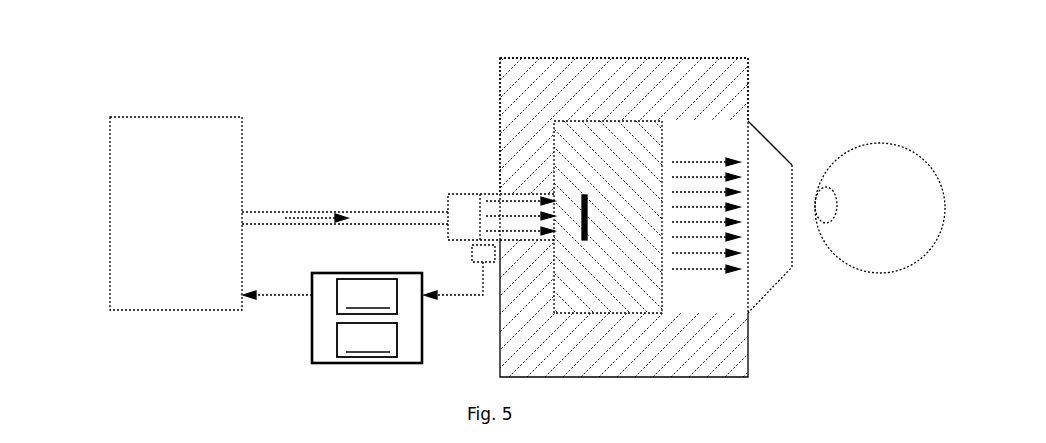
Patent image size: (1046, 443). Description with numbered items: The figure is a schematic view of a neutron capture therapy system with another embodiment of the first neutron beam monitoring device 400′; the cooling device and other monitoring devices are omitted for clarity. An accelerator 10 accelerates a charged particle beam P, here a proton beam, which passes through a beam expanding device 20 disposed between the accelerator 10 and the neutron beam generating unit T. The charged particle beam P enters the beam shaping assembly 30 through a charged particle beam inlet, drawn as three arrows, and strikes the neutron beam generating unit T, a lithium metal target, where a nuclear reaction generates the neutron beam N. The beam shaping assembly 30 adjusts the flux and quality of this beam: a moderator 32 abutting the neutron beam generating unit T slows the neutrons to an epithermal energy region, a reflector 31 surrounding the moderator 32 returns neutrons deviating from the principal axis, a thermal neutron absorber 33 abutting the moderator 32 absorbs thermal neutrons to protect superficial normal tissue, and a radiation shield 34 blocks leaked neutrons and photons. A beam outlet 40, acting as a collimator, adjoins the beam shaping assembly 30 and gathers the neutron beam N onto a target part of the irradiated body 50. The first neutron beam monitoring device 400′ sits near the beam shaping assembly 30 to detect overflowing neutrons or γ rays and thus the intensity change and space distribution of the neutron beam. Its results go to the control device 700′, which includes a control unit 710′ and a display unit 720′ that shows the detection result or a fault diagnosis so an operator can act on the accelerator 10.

The accelerator 10 is at (130, 272).
The beam expanding device 20 is at (446, 234).
The beam shaping assembly 30 is at (638, 44).
The reflector 31 is at (507, 73).
The moderator 32 is at (555, 297).
The thermal neutron absorber 33 is at (656, 286).
The radiation shield 34 is at (749, 78).
The beam outlet 40 is at (768, 271).
The irradiated body 50 is at (877, 262).
The first neutron beam monitoring device 400′ is at (472, 254).
The control device 700′ is at (310, 318).
The control unit 710′ is at (367, 296).
The display unit 720′ is at (367, 340).
The charged particle beam P is at (303, 221).
The neutron beam N is at (681, 162).
The neutron beam generating unit T is at (581, 206).